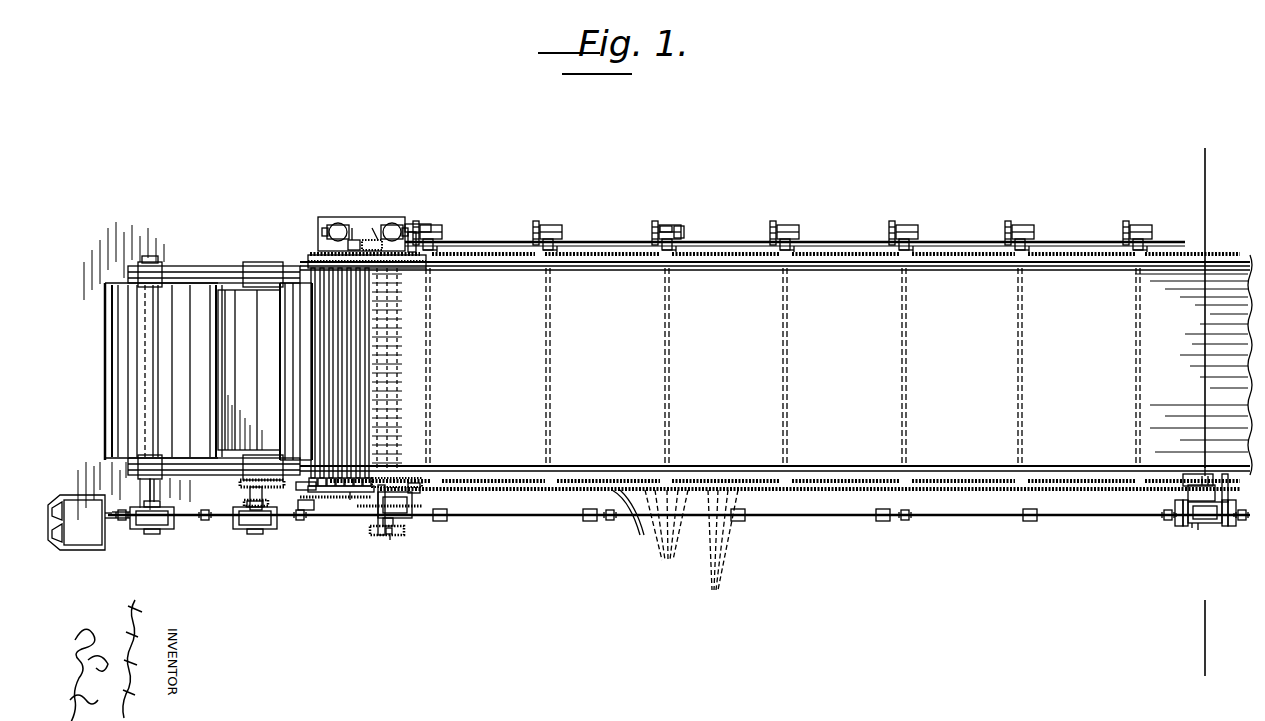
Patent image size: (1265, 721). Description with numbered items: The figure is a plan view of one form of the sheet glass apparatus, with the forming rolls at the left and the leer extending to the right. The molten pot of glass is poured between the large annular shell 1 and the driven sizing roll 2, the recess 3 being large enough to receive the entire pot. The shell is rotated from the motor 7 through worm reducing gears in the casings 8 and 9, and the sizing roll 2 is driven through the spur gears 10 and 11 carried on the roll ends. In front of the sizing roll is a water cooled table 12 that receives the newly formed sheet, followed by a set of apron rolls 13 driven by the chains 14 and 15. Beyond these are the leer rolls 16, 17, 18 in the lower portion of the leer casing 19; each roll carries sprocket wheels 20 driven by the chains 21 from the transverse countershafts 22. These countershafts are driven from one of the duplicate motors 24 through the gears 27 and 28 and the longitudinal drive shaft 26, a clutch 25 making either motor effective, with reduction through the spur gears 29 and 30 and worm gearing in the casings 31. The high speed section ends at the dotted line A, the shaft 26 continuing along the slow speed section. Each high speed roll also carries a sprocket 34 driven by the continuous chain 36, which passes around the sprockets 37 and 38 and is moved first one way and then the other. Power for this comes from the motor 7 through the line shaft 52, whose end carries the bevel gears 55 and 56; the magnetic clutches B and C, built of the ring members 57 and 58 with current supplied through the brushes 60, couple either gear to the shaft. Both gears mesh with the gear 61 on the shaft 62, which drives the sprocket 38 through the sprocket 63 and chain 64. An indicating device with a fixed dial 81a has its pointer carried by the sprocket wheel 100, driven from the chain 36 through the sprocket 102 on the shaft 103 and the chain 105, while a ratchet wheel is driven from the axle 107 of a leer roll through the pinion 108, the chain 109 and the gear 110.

The annular shell 1 is at (160, 345).
The sizing roll 2 is at (270, 320).
The recess 3 is at (234, 335).
The motor 7 is at (82, 530).
The casing 8 is at (140, 528).
The casing 9 is at (243, 528).
The spur gear 10 is at (245, 483).
The spur gear 11 is at (280, 520).
The water cooled table 12 is at (293, 328).
The apron rolls 13 is at (335, 296).
The chain 14 is at (320, 500).
The chain 15 is at (336, 498).
The leer roll 16 is at (378, 354).
The leer roll 17 is at (396, 376).
The leer roll 18 is at (400, 402).
The leer casing 19 is at (835, 284).
The sprocket wheel 20 is at (666, 532).
The chains 21 is at (632, 523).
The transverse countershaft 22 is at (550, 320).
The motor 24 is at (338, 224).
The clutch 25 is at (379, 246).
The longitudinal drive shaft 26 is at (515, 242).
The gear 27 is at (352, 240).
The gear 28 is at (366, 250).
The spur gear 29 is at (653, 240).
The spur gear 30 is at (667, 226).
The casing 31 is at (681, 228).
The sprocket 34 is at (719, 549).
The chain 36 is at (788, 490).
The sprocket 37 is at (352, 497).
The sprocket 38 is at (1203, 474).
The line shaft 52 is at (188, 520).
The bevel gear 55 is at (1192, 525).
The bevel gear 56 is at (1226, 525).
The ring member 57 is at (1184, 526).
The ring member 58 is at (1178, 526).
The brush 60 is at (1233, 512).
The gear 61 is at (1199, 524).
The shaft 62 is at (1187, 497).
The sprocket 63 is at (1187, 475).
The chain 64 is at (1226, 474).
The fixed dial 81a is at (391, 536).
The sprocket wheel 100 is at (396, 534).
The sprocket 102 is at (400, 488).
The shaft 103 is at (387, 520).
The chain 105 is at (402, 534).
The axle 107 is at (414, 496).
The pinion 108 is at (412, 480).
The chain 109 is at (415, 504).
The gear 110 is at (413, 520).
The line A— A is at (1190, 415).
The magnetic clutch B is at (1176, 526).
The magnetic clutch C is at (1238, 524).